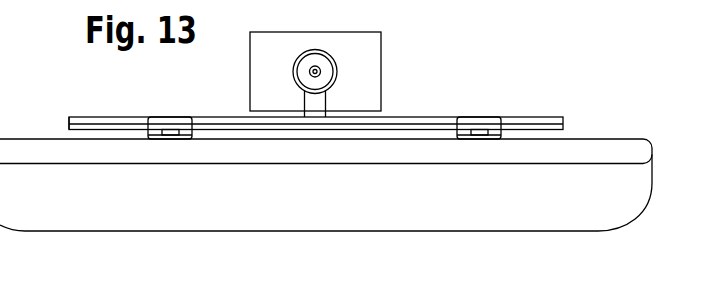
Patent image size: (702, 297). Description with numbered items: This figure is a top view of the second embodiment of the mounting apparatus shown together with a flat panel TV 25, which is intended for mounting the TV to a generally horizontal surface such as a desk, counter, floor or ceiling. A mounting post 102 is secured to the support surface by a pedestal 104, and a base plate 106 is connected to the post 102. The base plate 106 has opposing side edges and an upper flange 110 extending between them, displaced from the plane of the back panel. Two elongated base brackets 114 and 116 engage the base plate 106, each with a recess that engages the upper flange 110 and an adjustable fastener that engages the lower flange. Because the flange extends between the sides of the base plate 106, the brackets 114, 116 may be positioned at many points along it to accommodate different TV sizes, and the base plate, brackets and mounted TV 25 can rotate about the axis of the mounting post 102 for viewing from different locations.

The flat panel TV 25 is at (135, 214).
The mounting post 102 is at (338, 61).
The pedestal 104 is at (372, 92).
The base plate 106 is at (88, 118).
The upper flange 110 is at (535, 124).
The base bracket 114 is at (172, 117).
The base bracket 116 is at (483, 117).